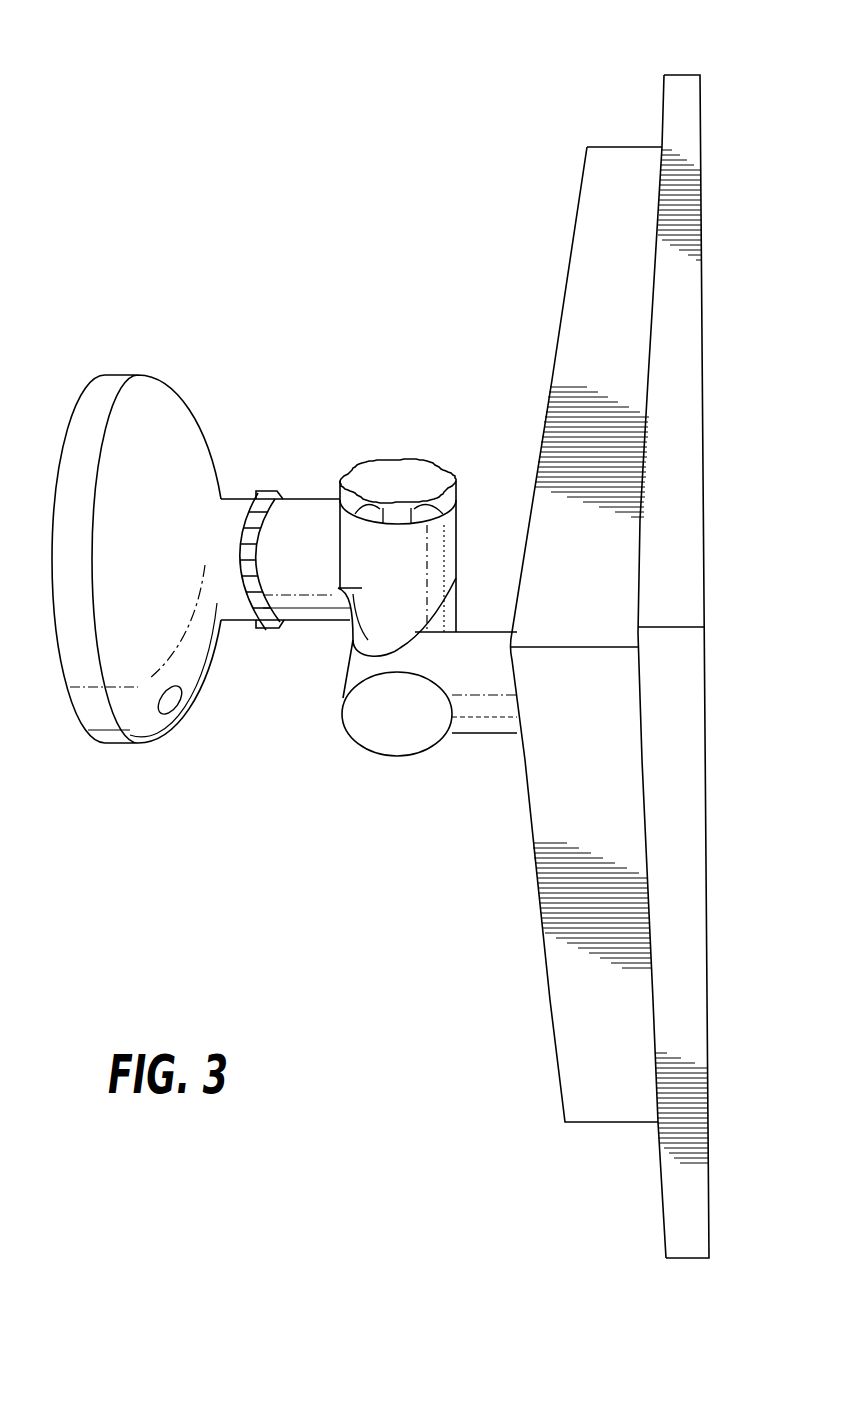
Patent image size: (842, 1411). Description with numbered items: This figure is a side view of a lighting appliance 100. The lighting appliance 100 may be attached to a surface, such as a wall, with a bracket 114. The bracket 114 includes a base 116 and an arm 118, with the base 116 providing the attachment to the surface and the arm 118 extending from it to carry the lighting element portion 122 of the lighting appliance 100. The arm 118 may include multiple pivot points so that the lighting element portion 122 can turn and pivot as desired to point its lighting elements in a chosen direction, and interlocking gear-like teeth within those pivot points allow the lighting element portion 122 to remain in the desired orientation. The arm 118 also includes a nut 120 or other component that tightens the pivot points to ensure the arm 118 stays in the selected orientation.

The lighting appliance 100 is at (204, 168).
The bracket 114 is at (248, 398).
The base 116 is at (98, 365).
The arm 118 is at (306, 680).
The nut 120 is at (402, 466).
The lighting element portion 122 is at (575, 126).